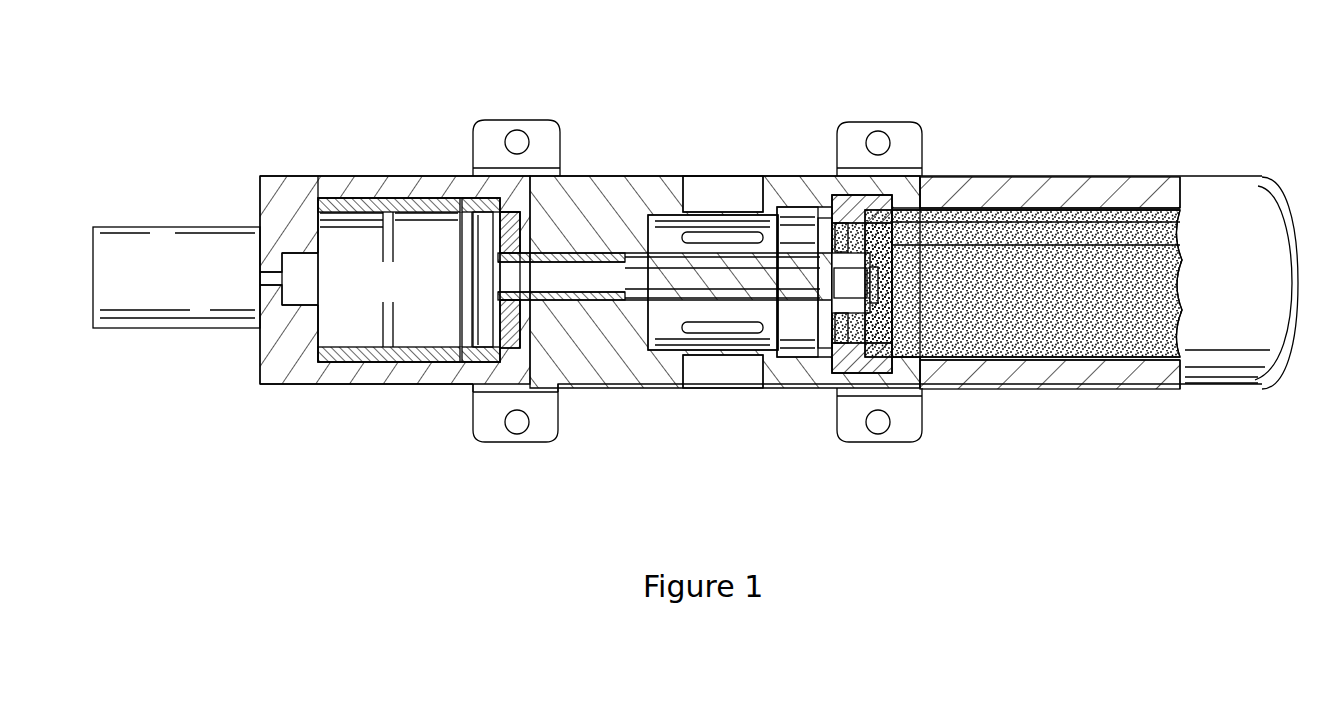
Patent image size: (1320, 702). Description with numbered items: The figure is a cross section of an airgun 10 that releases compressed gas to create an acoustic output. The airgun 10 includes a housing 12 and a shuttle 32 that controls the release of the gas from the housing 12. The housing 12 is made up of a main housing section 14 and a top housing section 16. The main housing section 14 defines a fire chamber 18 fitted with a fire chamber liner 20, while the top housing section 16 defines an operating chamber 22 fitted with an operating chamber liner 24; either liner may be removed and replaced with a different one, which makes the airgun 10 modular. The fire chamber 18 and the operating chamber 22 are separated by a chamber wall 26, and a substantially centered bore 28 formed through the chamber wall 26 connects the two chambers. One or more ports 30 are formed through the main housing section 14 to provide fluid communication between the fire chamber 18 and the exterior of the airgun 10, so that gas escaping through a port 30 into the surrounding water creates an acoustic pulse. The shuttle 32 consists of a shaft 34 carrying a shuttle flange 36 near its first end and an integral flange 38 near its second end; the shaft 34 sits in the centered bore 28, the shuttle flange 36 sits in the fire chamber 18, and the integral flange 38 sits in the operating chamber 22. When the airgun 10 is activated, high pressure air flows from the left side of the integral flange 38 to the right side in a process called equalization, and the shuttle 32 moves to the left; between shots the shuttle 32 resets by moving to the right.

The airgun 10 is at (400, 122).
The housing 12 is at (1232, 177).
The main housing section 14 is at (1085, 390).
The top housing section 16 is at (310, 176).
The fire chamber 18 is at (1043, 298).
The fire chamber liner 20 is at (1135, 208).
The operating chamber 22 is at (409, 335).
The operating chamber liner 24 is at (360, 362).
The chamber wall 26 is at (610, 176).
The centered bore 28 is at (570, 320).
The port 30 is at (723, 190).
The shuttle 32 is at (797, 318).
The shaft 34 is at (677, 287).
The shuttle flange 36 is at (820, 240).
The integral flange 38 is at (478, 327).